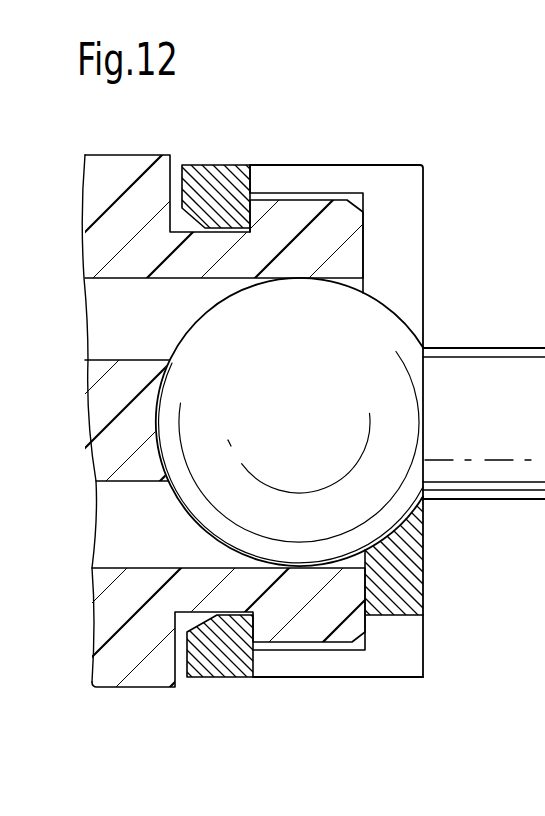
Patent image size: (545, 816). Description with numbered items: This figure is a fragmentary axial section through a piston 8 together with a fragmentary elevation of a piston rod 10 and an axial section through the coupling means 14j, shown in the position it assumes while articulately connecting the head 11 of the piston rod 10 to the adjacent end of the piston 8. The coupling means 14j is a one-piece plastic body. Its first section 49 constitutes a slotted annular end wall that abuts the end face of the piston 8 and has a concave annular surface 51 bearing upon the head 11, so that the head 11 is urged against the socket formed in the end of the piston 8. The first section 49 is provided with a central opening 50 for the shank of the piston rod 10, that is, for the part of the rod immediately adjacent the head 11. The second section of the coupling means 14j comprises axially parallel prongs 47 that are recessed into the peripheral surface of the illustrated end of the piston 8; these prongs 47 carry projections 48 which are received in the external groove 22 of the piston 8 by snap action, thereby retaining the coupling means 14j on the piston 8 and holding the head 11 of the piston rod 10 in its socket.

The piston 8 is at (112, 665).
The piston rod 10 is at (490, 370).
The head 11 is at (210, 483).
The coupling means 14j is at (426, 592).
The external groove 22 is at (184, 619).
The prongs 47 is at (353, 665).
The projections 48 is at (240, 623).
The first section 49 is at (398, 237).
The central opening 50 is at (425, 512).
The concave annular surface 51 is at (378, 540).